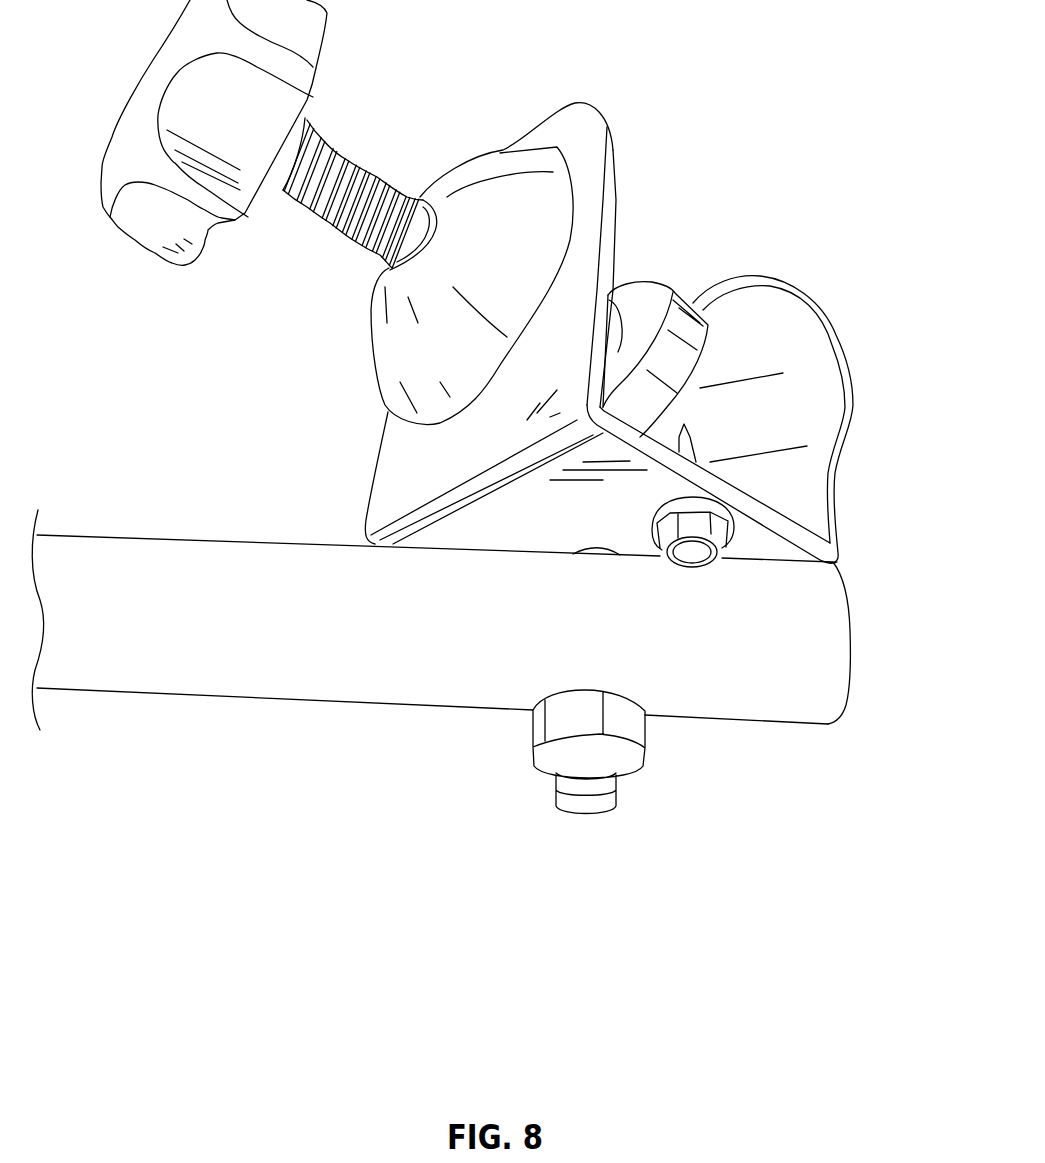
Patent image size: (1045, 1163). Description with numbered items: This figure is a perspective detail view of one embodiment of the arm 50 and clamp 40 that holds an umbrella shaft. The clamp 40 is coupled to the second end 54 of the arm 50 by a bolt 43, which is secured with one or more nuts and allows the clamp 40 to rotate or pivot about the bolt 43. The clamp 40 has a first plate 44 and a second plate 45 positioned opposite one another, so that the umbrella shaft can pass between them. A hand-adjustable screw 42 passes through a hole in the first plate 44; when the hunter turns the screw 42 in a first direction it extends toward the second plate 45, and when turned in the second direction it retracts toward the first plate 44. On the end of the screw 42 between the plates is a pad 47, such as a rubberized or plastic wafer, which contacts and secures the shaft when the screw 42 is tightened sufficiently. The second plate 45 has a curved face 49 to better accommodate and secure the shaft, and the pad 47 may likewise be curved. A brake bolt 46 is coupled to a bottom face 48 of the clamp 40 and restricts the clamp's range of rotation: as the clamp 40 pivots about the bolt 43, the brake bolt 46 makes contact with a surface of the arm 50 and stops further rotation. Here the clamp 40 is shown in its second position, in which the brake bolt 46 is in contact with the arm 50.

The clamp 40 is at (933, 176).
The hand-adjustable screw 42 is at (222, 268).
The bolt 43 is at (642, 797).
The first plate 44 is at (631, 158).
The second plate 45 is at (853, 340).
The brake bolt 46 is at (722, 572).
The pad 47 is at (688, 282).
The bottom face 48 is at (823, 573).
The curved face 49 is at (807, 407).
The arm 50 is at (87, 705).
The second end 54 is at (423, 770).